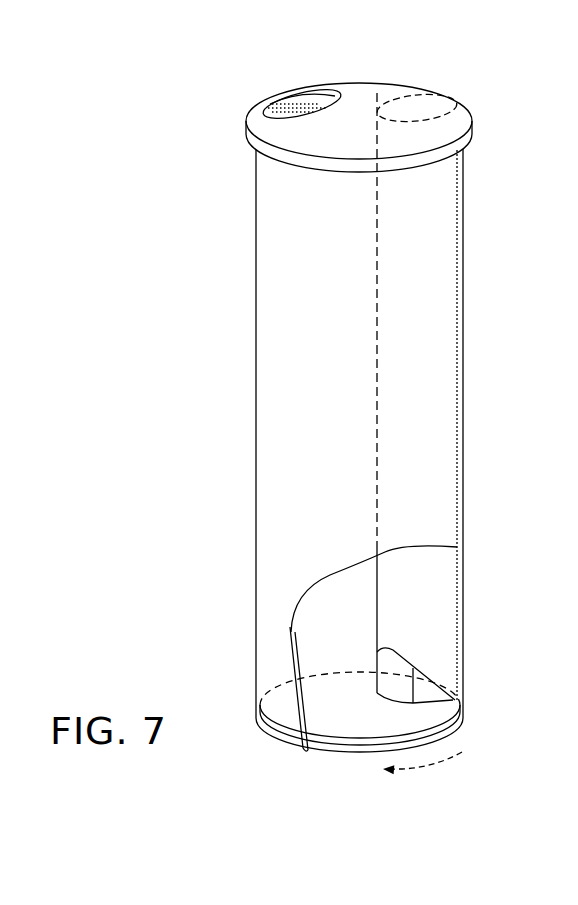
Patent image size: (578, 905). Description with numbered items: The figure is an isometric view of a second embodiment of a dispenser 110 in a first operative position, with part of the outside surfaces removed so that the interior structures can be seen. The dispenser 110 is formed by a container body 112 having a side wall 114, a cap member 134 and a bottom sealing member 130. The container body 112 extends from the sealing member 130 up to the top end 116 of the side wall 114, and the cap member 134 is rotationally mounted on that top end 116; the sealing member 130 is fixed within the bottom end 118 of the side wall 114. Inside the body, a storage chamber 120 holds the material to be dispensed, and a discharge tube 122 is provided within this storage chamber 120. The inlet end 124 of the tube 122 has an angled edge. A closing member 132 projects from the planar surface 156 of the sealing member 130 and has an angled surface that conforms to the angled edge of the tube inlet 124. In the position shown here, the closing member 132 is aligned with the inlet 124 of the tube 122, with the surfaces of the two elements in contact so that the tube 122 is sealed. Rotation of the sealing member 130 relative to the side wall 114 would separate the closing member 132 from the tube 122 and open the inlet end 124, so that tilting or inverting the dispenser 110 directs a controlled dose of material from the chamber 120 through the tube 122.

The dispenser 110 is at (142, 81).
The container body 112 is at (275, 243).
The side wall 114 is at (285, 362).
The top end 116 is at (470, 151).
The bottom end 118 is at (278, 734).
The storage chamber 120 is at (359, 597).
The discharge tube 122 is at (425, 277).
The inlet end 124 is at (445, 672).
The sealing member 130 is at (388, 721).
The closing member 132 is at (403, 687).
The cap member 134 is at (308, 100).
The planar surface 156 is at (340, 718).